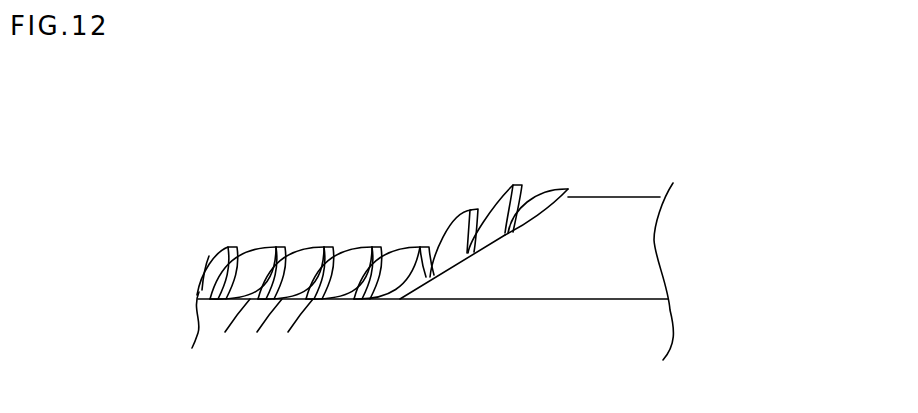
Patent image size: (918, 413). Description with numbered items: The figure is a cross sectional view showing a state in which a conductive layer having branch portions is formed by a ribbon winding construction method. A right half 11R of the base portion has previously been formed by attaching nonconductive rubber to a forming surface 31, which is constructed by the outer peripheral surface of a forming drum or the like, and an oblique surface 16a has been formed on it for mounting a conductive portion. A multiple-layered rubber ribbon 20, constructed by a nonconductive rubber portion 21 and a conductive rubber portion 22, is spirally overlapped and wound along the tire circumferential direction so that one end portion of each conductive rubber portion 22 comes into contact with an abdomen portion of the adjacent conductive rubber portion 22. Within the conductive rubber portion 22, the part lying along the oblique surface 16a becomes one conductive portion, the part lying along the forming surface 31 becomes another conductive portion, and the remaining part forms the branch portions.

The multiple-layered rubber ribbon 20 is at (489, 137).
The nonconductive rubber portion 21 is at (447, 238).
The conductive rubber portion 22 is at (475, 208).
The oblique surface 16a is at (476, 253).
The forming surface 31 is at (613, 300).
The right half of the base portion 11R is at (633, 207).